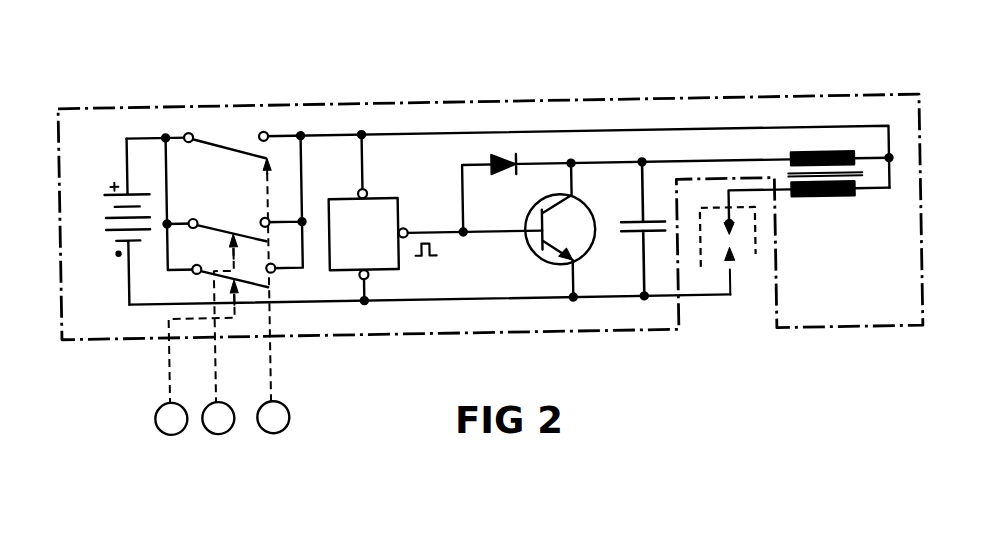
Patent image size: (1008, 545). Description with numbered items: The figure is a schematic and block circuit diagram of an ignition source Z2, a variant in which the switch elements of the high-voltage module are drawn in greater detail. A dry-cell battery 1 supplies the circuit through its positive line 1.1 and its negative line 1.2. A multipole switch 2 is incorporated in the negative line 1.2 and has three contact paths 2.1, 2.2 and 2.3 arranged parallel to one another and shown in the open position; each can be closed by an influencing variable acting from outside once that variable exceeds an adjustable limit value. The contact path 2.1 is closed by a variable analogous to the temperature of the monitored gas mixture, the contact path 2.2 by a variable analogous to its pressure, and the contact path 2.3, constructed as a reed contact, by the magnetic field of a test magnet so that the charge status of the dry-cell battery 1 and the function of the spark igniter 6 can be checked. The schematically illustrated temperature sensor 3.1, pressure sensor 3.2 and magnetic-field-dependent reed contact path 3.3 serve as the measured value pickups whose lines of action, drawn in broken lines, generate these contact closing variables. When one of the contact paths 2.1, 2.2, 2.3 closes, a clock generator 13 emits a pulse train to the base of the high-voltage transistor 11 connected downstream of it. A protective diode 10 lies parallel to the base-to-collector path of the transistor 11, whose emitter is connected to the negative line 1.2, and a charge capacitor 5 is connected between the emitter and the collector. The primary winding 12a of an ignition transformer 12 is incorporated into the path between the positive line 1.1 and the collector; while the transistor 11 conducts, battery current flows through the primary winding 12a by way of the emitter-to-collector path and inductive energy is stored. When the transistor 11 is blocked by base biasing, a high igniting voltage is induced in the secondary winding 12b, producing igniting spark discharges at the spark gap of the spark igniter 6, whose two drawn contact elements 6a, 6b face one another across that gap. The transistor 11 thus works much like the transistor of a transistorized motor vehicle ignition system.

The dry-cell battery 1 is at (118, 214).
The positive line 1.1 is at (674, 132).
The negative line 1.2 is at (323, 301).
The multipole switch 2 is at (240, 184).
The contact path 2.1 is at (206, 136).
The contact path 2.2 is at (223, 225).
The contact path 2.3 is at (214, 279).
The temperature sensor 3.1 is at (268, 431).
The pressure sensor 3.2 is at (213, 431).
The reed contact path 3.3 is at (166, 431).
The charge capacitor 5 is at (637, 222).
The spark igniter 6 is at (759, 276).
The relay contact 6a is at (730, 240).
The relay contact 6b is at (733, 271).
The protective diode 10 is at (506, 178).
The high-voltage transistor 11 is at (529, 244).
The ignition transformer 12 is at (807, 149).
The primary winding 12a is at (838, 158).
The secondary winding 12b is at (830, 203).
The clock generator 13 is at (436, 217).
The ignition source Z2 is at (580, 90).